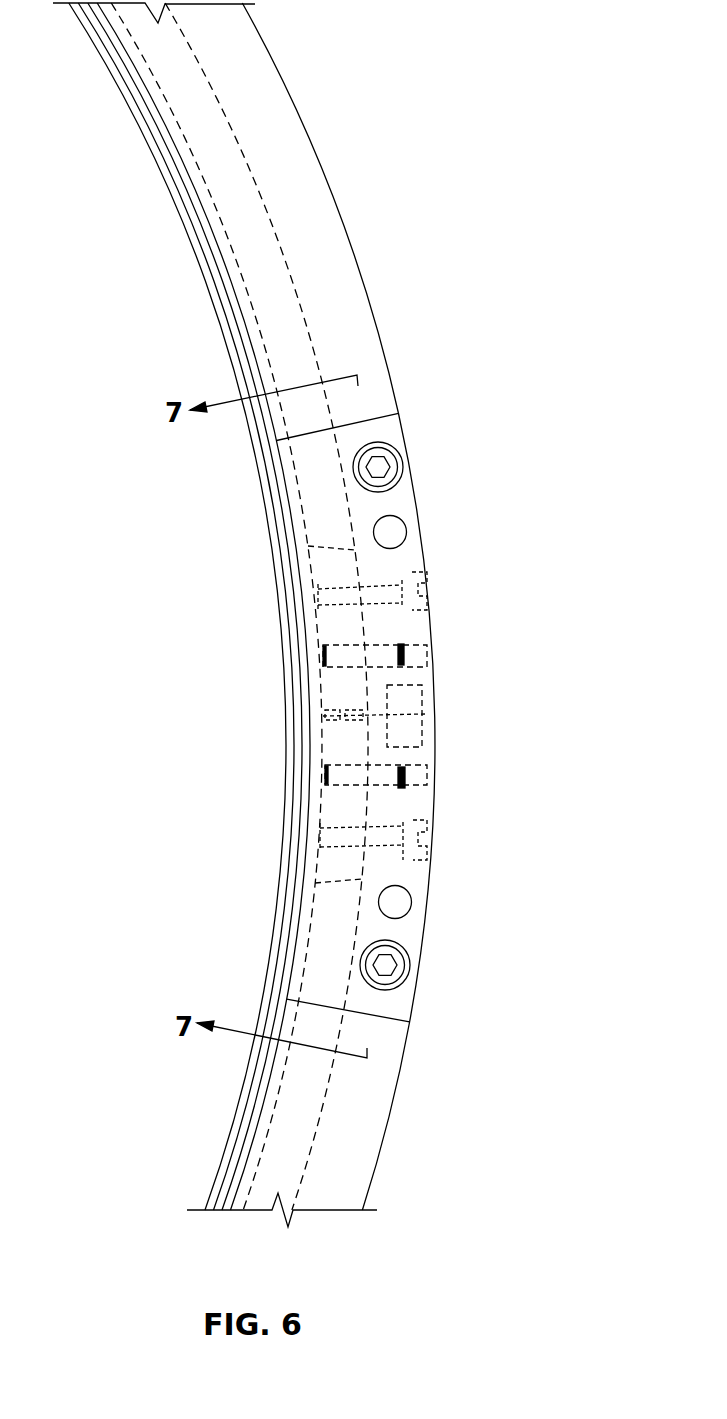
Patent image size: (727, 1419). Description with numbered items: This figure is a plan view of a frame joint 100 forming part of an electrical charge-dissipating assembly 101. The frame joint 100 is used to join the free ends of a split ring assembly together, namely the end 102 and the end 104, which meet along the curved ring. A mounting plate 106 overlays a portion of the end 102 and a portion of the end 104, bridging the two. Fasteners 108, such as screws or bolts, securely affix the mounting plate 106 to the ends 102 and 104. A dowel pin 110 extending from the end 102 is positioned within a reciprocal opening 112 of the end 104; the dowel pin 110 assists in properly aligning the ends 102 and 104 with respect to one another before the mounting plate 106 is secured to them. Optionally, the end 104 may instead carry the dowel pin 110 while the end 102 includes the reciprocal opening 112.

The frame joint 100 is at (434, 516).
The electrical charge-dissipating assembly 101 is at (458, 94).
The end 102 is at (378, 387).
The end 104 is at (370, 1115).
The mounting plate 106 is at (320, 507).
The fasteners 108 is at (380, 466).
The dowel pin 110 is at (408, 702).
The reciprocal opening 112 is at (434, 738).